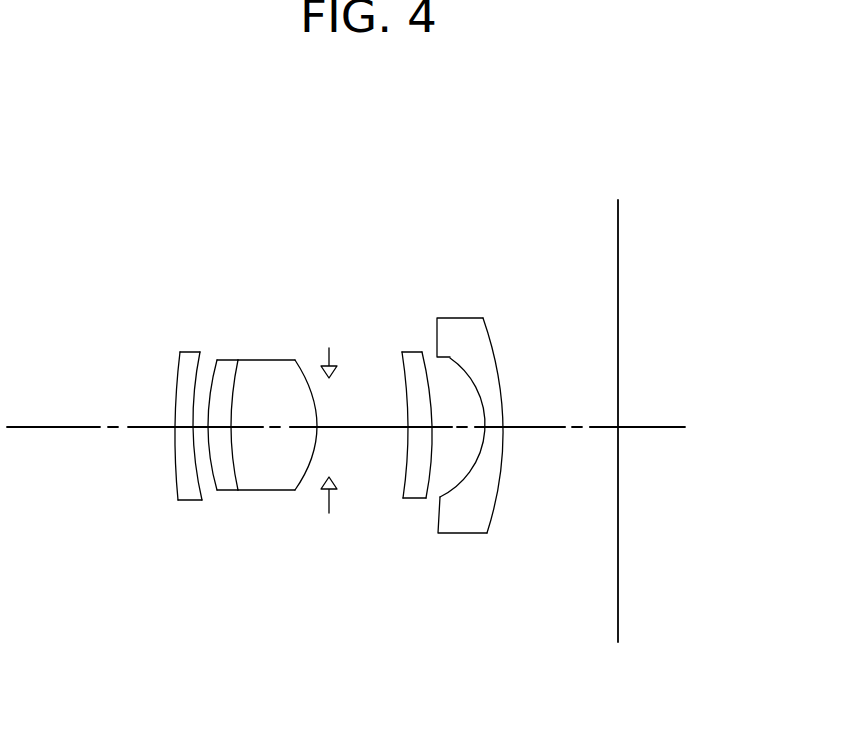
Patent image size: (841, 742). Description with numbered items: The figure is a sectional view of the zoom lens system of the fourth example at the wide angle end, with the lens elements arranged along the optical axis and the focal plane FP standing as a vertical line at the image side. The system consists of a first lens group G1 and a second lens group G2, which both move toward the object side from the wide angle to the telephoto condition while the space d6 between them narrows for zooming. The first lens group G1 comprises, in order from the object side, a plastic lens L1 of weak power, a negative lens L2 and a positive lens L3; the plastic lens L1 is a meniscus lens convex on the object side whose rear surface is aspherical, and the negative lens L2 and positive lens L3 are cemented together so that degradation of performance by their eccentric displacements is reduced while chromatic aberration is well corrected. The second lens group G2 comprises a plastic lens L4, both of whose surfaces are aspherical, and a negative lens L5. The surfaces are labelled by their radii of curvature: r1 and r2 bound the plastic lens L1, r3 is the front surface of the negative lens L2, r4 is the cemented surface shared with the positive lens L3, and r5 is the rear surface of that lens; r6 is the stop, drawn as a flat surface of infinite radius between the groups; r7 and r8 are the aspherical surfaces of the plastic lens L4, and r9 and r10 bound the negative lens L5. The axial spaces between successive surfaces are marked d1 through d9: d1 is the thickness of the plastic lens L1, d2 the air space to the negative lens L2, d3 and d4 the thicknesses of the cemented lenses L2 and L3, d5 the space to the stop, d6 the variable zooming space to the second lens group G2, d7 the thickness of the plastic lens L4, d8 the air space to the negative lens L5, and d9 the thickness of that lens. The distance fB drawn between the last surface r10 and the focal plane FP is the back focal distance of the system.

The first lens group G1 is at (340, 162).
The second lens group G2 is at (503, 162).
The plastic lens L1 is at (176, 335).
The negative lens L2 is at (244, 330).
The positive lens L3 is at (277, 330).
The plastic lens L4 is at (402, 334).
The negative lens L5 is at (486, 351).
The radius of curvature of lens surface r1 is at (174, 366).
The radius of curvature of lens surface r2 is at (201, 370).
The radius of curvature of lens surface r3 is at (221, 373).
The radius of curvature of lens surface r4 is at (236, 380).
The radius of curvature of lens surface r5 is at (301, 370).
The stop r6 is at (329, 393).
The radius of curvature of lens surface r7 is at (403, 378).
The radius of curvature of lens surface r8 is at (428, 367).
The radius of curvature of lens surface r9 is at (448, 358).
The radius of curvature of lens surface r10 is at (493, 353).
The space between lens surfaces d1 is at (183, 430).
The space between lens surfaces d2 is at (210, 428).
The space between lens surfaces d3 is at (228, 428).
The space between lens surfaces d4 is at (274, 446).
The space between lens surfaces d5 is at (320, 428).
The space between lens surfaces d6 is at (368, 446).
The space between lens surfaces d7 is at (420, 430).
The space between lens surfaces d8 is at (458, 446).
The space between lens surfaces d9 is at (493, 428).
The back focal distance fB is at (573, 432).
The focal plane FP is at (618, 236).